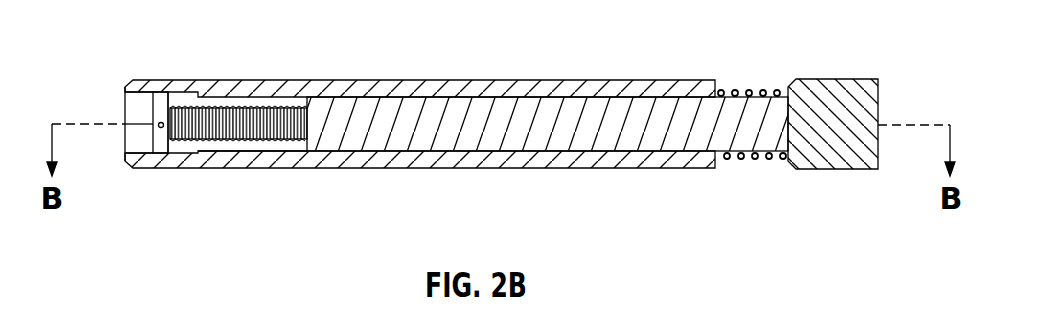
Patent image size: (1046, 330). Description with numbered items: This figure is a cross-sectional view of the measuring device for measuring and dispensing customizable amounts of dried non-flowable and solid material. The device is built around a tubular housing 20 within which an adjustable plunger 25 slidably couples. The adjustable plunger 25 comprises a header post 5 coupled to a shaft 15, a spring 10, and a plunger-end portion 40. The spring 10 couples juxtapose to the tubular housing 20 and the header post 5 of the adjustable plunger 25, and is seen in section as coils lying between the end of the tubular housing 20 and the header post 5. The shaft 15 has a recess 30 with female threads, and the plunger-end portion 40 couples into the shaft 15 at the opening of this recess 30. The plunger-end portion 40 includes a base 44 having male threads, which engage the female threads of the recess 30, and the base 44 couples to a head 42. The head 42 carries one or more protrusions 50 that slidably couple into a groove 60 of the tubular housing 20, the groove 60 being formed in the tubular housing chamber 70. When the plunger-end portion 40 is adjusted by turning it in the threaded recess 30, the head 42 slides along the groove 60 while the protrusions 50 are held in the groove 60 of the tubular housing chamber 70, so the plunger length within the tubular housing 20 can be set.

The header post 5 is at (833, 127).
The spring 10 is at (772, 160).
The shaft 15 is at (547, 124).
The tubular housing 20 is at (485, 78).
The adjustable plunger 25 is at (830, 78).
The recess 30 is at (283, 140).
The plunger-end portion 40 is at (153, 103).
The head 42 is at (165, 97).
The base 44 is at (220, 145).
The protrusion 50 is at (161, 128).
The groove 60 is at (152, 118).
The tubular housing chamber 70 is at (131, 166).